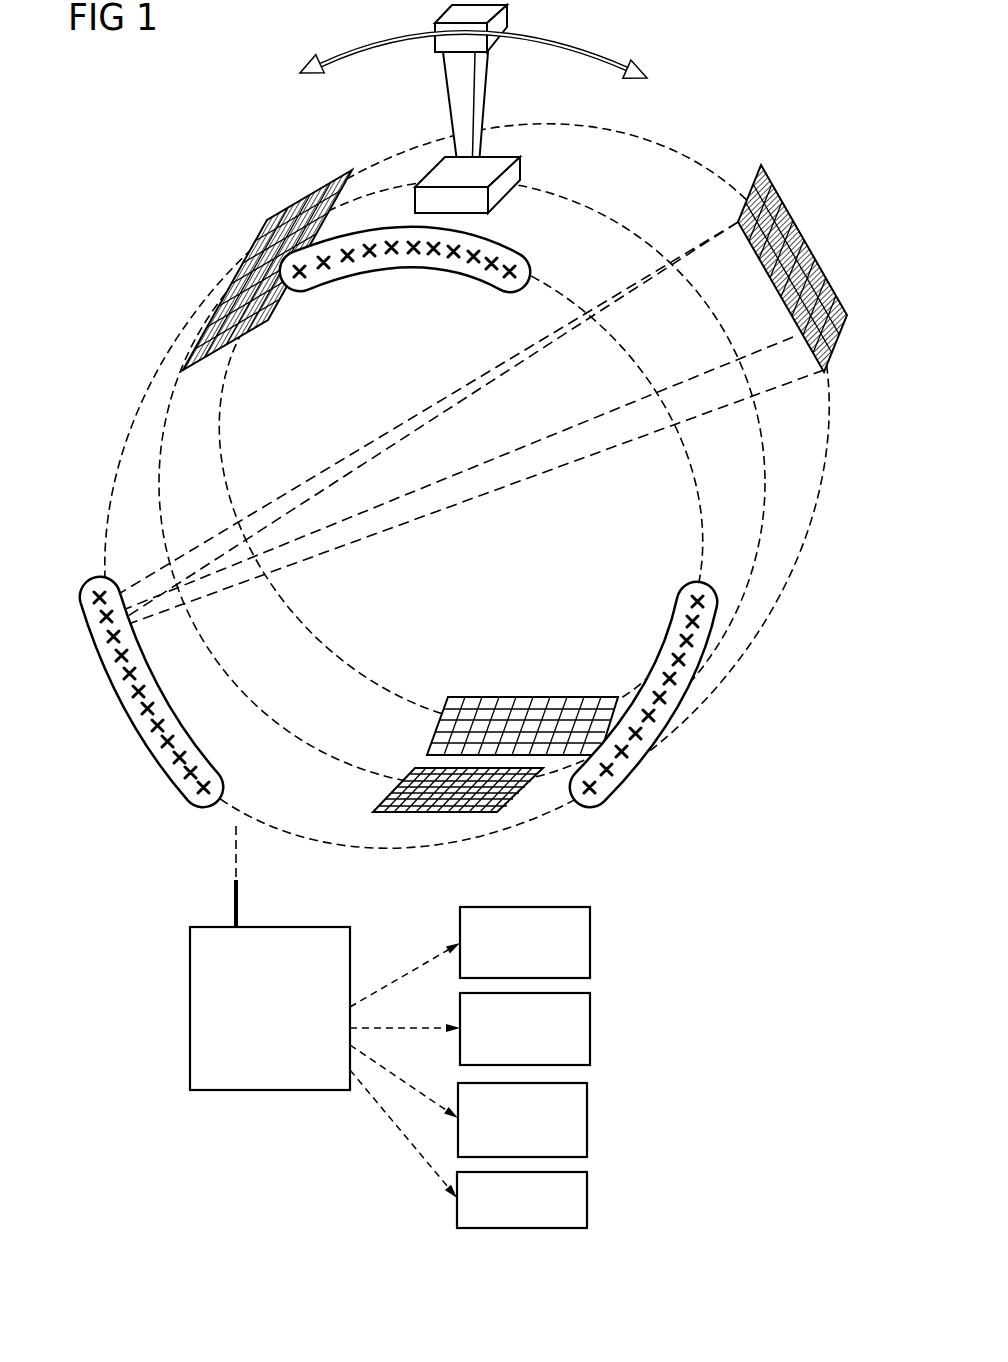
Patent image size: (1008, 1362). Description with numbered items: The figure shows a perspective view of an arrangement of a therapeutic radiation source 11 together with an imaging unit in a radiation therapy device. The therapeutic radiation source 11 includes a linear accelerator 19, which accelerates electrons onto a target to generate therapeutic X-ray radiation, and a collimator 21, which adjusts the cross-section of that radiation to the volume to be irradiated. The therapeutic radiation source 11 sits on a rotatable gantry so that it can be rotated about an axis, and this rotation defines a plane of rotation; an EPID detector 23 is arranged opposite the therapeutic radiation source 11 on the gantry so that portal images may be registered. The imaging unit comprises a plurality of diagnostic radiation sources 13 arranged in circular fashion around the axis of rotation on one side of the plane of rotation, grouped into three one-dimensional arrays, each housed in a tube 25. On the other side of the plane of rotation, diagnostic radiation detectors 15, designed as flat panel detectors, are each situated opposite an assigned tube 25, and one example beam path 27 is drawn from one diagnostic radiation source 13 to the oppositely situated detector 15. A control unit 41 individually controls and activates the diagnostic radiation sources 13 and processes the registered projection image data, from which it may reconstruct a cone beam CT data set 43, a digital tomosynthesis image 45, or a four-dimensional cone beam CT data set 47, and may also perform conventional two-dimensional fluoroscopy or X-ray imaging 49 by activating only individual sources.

The therapeutic radiation source 11 is at (398, 99).
The diagnostic radiation sources 13 is at (400, 252).
The diagnostic radiation detectors 15 is at (278, 210).
The linear accelerator 19 is at (488, 76).
The collimator 21 is at (497, 195).
The EPID detector 23 is at (390, 791).
The tube 25 is at (428, 275).
The beam path 27 is at (525, 446).
The control unit 41 is at (190, 1007).
The cone beam CT data set 43 is at (591, 942).
The digital tomosynthesis image 45 is at (591, 1028).
The four-dimensional cone beam CT data set 47 is at (589, 1118).
The two-dimensional fluoroscopy or X-ray imaging 49 is at (589, 1198).